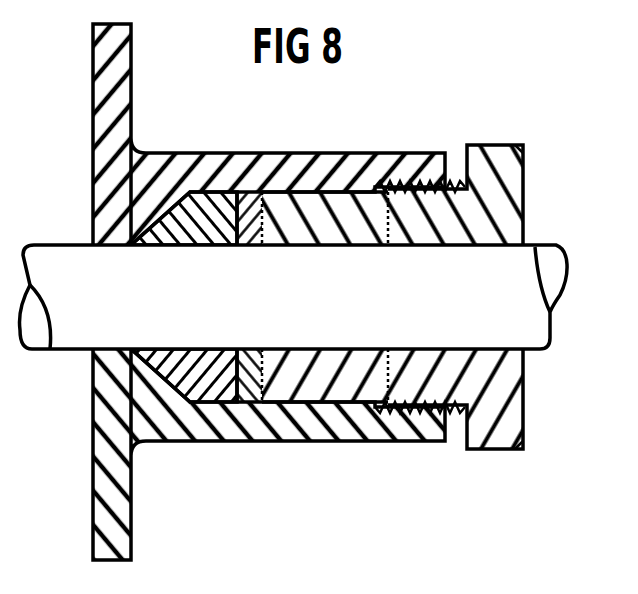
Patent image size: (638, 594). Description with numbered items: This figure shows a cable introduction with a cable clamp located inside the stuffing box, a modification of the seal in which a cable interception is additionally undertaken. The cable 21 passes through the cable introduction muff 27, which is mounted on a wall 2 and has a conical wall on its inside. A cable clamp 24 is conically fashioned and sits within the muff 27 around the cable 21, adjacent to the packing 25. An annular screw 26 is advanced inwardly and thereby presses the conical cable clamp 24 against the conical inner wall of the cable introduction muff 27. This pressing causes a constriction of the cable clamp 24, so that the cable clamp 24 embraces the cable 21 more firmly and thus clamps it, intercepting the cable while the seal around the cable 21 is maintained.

The wall / mounting flange 2 is at (118, 62).
The cable 21 is at (76, 319).
The cable clamp 24 is at (195, 222).
The packing 25 is at (293, 213).
The annular screw 26 is at (500, 217).
The cable introduction muff 27 is at (262, 427).